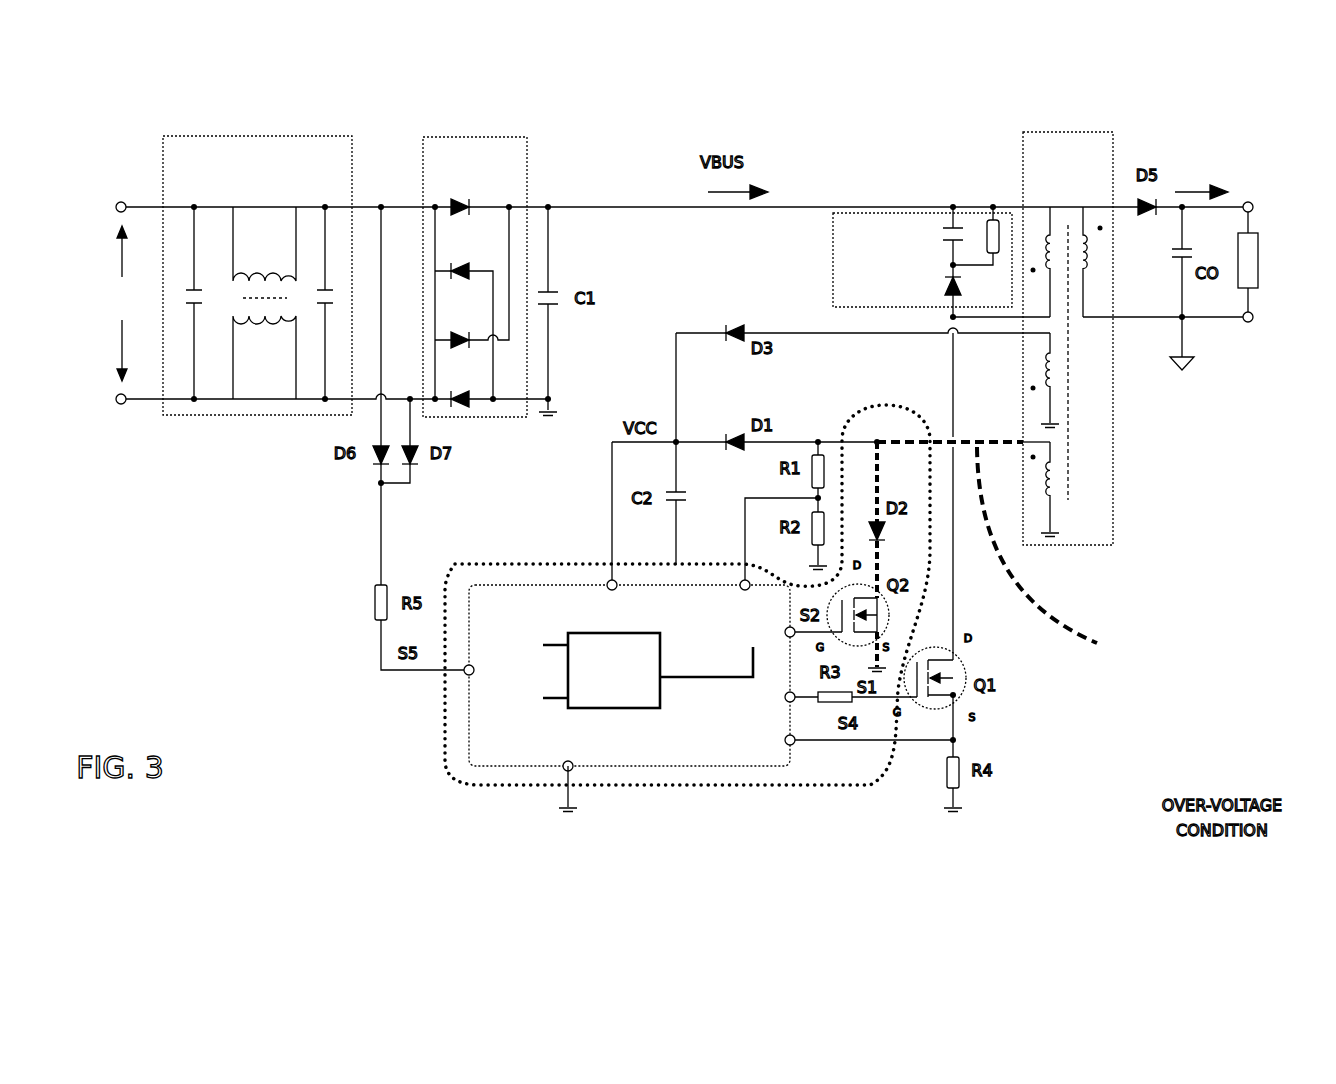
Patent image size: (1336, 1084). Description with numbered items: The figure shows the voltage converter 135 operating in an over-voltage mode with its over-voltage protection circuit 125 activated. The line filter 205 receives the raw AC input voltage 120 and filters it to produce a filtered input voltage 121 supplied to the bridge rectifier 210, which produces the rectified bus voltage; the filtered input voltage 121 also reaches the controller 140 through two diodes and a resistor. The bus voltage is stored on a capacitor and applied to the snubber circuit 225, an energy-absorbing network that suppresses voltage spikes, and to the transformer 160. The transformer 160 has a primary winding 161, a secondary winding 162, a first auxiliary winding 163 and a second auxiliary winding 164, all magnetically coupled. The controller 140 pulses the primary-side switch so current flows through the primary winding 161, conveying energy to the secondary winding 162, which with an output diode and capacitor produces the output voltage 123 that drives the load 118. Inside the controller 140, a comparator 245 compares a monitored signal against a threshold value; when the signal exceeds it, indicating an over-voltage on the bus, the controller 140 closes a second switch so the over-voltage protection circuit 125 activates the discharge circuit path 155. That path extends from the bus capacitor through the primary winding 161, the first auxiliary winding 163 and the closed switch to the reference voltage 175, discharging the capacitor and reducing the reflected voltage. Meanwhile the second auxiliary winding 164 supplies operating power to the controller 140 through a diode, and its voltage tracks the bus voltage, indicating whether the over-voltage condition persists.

The line filter 205 is at (281, 135).
The bridge rectifier 210 is at (476, 137).
The filtered input voltage 121 is at (381, 205).
The input voltage 120 is at (110, 303).
The output voltage 123 is at (1197, 183).
The load 118 is at (1262, 258).
The snubber circuit 225 is at (831, 268).
The transformer 160 is at (1075, 338).
The primary winding 161 is at (1047, 242).
The secondary winding 162 is at (1095, 240).
The second auxiliary winding 164 is at (1066, 368).
The first auxiliary winding 163 is at (1067, 480).
The reference voltage 175 is at (719, 448).
The voltage converter 135 is at (295, 560).
The controller 140 is at (524, 694).
The comparator 245 is at (600, 687).
The over-voltage protection circuit 125 is at (718, 796).
The discharge circuit path 155 is at (1091, 568).